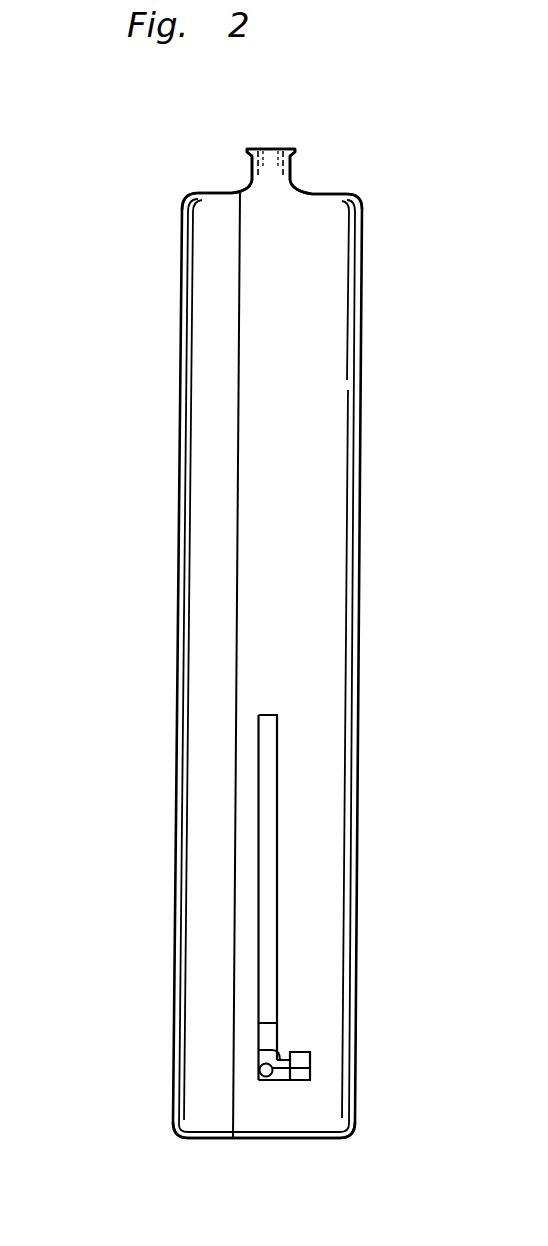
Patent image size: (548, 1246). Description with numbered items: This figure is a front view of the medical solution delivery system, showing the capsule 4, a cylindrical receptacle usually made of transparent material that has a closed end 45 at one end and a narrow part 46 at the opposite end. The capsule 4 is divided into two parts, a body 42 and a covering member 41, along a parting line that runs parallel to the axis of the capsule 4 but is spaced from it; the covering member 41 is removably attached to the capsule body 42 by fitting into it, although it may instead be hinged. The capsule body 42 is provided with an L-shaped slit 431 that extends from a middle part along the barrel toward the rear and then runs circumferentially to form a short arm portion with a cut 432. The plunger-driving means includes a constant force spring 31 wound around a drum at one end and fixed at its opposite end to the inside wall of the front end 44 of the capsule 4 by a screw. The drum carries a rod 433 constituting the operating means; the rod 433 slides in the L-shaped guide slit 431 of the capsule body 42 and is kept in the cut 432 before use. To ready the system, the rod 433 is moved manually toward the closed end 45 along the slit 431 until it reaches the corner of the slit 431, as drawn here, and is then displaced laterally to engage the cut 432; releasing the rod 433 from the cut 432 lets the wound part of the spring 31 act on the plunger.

The capsule 4 is at (152, 528).
The covering member 41 is at (178, 672).
The capsule body 42 is at (362, 427).
The front end 44 is at (210, 192).
The closed end 45 is at (215, 1138).
The narrow part 46 is at (293, 162).
The L-shaped slit 431 is at (271, 842).
The constant force spring 31 is at (262, 1022).
The cut 432 is at (292, 1053).
The rod 433 is at (310, 1070).